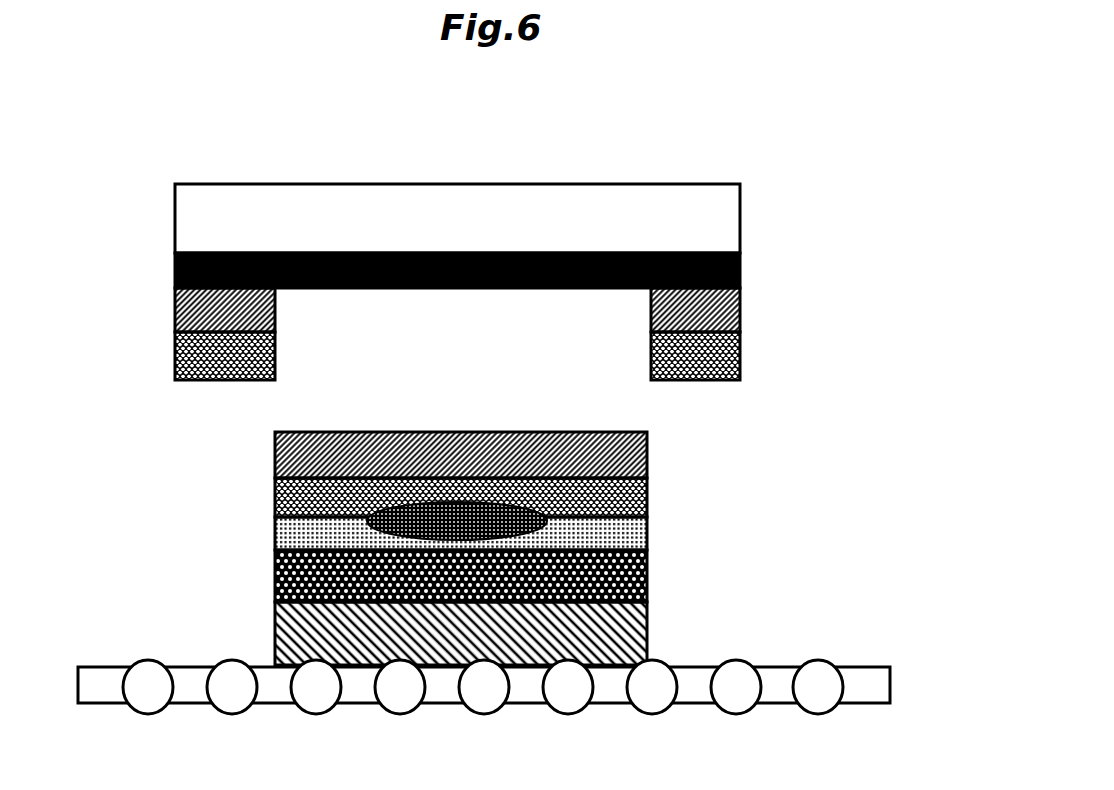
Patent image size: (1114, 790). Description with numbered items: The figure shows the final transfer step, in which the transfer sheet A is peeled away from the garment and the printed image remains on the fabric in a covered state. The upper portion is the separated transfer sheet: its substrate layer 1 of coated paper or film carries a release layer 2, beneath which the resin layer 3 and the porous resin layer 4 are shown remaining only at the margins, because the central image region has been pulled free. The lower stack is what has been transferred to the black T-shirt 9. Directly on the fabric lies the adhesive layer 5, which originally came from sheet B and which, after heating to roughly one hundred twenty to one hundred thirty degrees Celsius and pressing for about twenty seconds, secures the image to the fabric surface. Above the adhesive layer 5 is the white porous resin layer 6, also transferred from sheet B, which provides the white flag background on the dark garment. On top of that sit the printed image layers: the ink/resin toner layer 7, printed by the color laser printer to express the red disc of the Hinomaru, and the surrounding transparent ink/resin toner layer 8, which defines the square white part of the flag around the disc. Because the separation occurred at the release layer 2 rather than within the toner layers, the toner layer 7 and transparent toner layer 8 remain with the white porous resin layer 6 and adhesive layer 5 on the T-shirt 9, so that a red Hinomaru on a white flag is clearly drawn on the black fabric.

The substrate layer 1 is at (740, 213).
The release layer 2 is at (740, 269).
The resin layer 3 is at (740, 307).
The porous resin layer 4 is at (740, 353).
The adhesive layer 5 is at (647, 631).
The white porous resin layer 6 is at (647, 576).
The ink/resin toner layer 7 is at (372, 520).
The transparent ink/resin toner layer 8 is at (647, 541).
The T-shirt 9 is at (880, 687).